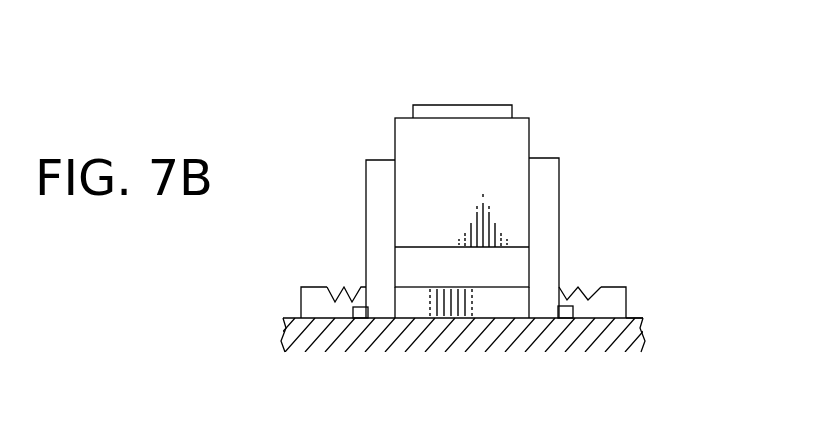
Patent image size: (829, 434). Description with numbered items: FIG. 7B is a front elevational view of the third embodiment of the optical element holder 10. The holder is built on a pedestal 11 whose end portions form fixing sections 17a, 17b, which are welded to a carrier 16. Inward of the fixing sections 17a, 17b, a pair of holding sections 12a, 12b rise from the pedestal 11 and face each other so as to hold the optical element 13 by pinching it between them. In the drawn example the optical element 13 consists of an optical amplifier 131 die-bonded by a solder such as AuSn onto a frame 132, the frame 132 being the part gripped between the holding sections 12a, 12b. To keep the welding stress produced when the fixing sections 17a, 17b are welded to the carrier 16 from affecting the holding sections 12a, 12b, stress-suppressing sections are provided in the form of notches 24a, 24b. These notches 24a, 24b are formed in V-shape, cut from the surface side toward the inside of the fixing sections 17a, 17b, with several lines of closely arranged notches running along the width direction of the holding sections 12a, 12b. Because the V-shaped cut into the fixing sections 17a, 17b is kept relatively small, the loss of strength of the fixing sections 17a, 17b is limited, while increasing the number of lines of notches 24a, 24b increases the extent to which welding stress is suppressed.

The optical element holder 10 is at (632, 192).
The pedestal 11 is at (507, 312).
The holding section 12a is at (375, 160).
The holding section 12b is at (550, 158).
The optical element 13 is at (550, 52).
The optical amplifier 131 is at (483, 112).
The frame 132 is at (405, 140).
The carrier 16 is at (643, 317).
The fixing section 17a is at (301, 306).
The fixing section 17b is at (626, 297).
The notch 24a is at (363, 279).
The notch 24b is at (560, 279).